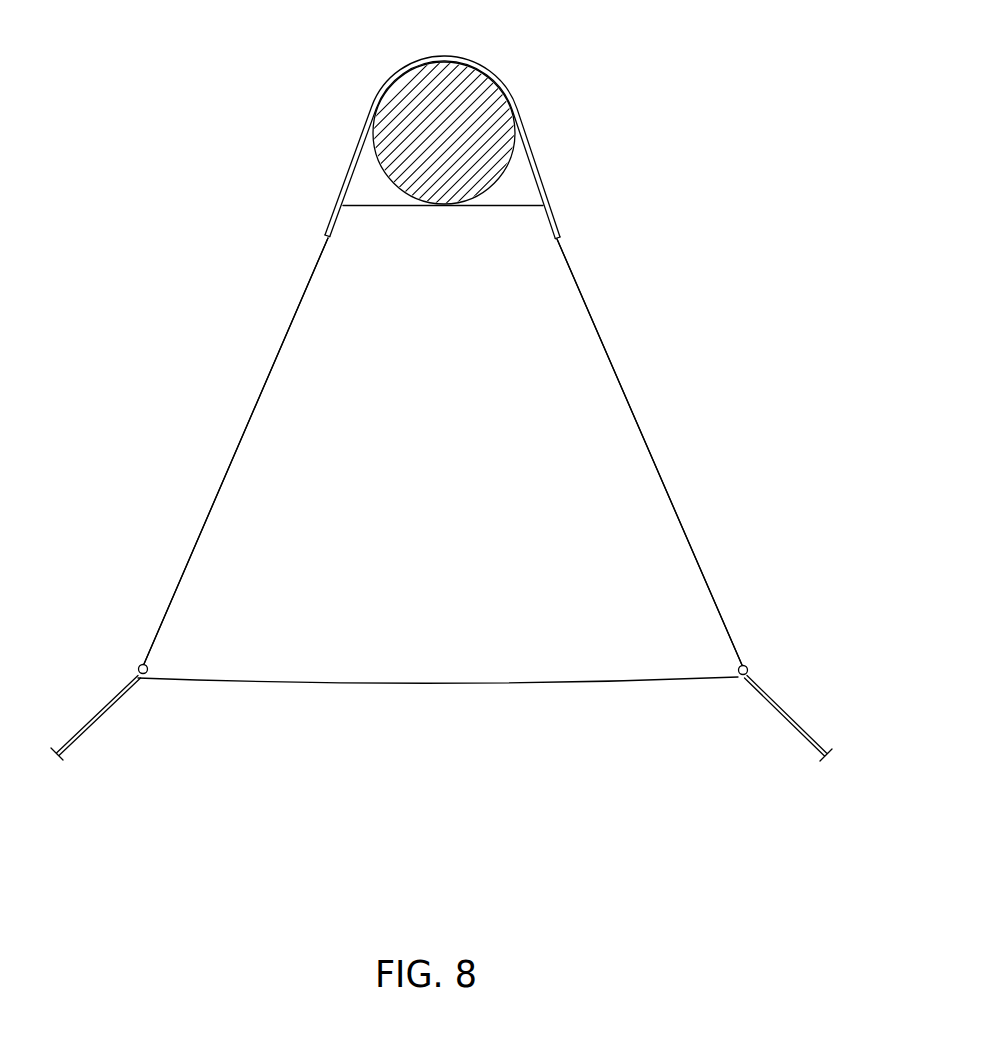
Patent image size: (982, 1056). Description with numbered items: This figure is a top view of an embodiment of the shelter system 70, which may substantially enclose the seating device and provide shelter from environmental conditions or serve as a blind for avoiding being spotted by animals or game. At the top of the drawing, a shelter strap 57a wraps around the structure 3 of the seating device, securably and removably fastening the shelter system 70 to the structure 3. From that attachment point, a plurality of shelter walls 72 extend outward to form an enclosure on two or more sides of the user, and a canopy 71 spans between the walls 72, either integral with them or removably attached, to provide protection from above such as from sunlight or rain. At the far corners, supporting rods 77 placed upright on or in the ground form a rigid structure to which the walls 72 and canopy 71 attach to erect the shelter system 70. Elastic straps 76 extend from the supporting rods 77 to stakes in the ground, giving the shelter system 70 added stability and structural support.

The structure 3 is at (417, 112).
The shelter strap 57a is at (527, 153).
The shelter system 70 is at (643, 245).
The canopy 71 is at (332, 422).
The shelter walls 72 is at (222, 468).
The elastic strap 76 is at (112, 704).
The supporting rod 77 is at (142, 663).